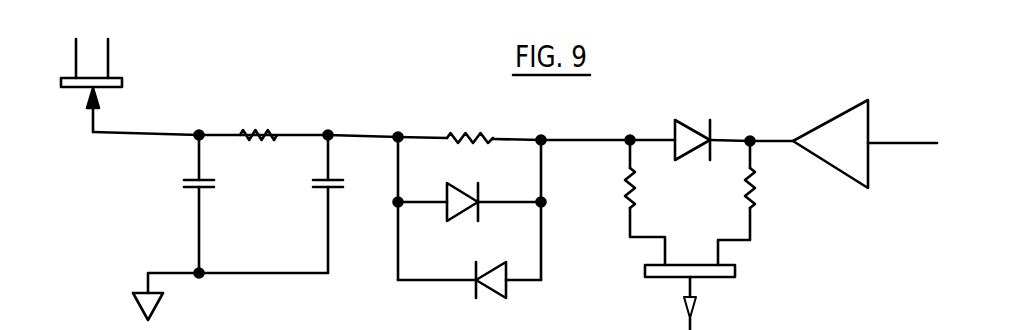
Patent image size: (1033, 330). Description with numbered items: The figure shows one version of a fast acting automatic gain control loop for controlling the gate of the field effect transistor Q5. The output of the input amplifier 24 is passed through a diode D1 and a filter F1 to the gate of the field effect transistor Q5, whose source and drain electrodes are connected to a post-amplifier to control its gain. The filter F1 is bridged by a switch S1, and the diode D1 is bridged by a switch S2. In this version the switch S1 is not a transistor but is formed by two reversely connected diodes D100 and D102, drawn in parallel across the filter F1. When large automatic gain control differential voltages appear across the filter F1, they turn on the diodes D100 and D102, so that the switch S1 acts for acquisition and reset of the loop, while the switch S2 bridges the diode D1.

The field effect transistor Q5 is at (113, 75).
The filter F1 is at (335, 175).
The diode D100 is at (455, 185).
The diode D102 is at (499, 263).
The switch S1 is at (473, 232).
The switch S2 is at (716, 222).
The diode D1 is at (692, 128).
The input amplifier 24 is at (838, 132).